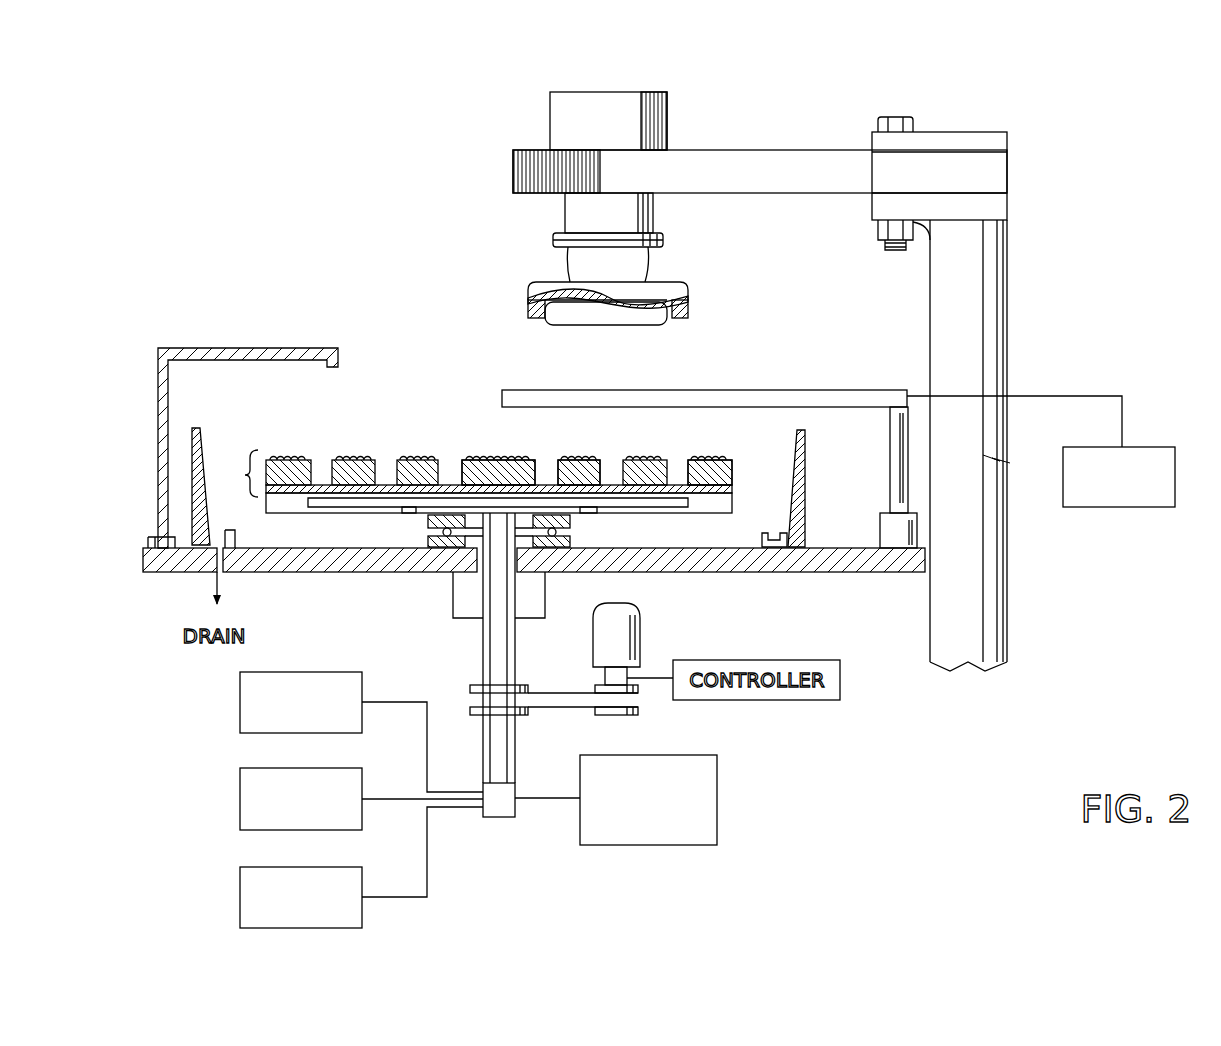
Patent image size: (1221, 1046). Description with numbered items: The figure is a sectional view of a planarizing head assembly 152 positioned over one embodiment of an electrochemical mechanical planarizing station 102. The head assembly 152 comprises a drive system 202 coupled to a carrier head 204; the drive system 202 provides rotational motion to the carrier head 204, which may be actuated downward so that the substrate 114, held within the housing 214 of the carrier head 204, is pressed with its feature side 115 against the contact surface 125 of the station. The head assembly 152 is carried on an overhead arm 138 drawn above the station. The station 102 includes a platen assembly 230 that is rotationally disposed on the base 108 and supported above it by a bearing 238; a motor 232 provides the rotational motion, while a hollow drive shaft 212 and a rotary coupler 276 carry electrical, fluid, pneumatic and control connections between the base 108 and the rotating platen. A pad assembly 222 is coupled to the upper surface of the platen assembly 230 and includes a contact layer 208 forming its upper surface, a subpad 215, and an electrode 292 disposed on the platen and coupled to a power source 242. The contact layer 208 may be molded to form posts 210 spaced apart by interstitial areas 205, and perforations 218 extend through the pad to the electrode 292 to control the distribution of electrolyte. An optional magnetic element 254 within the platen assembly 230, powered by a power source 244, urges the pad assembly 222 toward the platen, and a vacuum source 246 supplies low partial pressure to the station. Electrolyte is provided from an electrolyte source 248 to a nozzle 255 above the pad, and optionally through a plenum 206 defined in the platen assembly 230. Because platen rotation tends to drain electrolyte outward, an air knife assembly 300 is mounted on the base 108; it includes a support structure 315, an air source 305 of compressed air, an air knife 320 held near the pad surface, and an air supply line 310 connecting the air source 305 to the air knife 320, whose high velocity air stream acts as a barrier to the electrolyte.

The ECMP station 102 is at (276, 236).
The base 108 is at (805, 575).
The substrate 114 is at (567, 300).
The feature side 115 is at (630, 327).
The contact surface 125 is at (485, 349).
The arm 138 is at (774, 150).
The planarizing head assembly 152 is at (528, 212).
The drive system 202 is at (550, 106).
The carrier head 204 is at (684, 282).
The interstitial areas 205 is at (500, 458).
The plenum 206 is at (733, 460).
The contact layer 208 is at (680, 458).
The posts 210 is at (568, 458).
The hollow drive shaft 212 is at (483, 647).
The housing 214 is at (692, 298).
The subpad 215 is at (733, 472).
The perforations 218 is at (385, 450).
The pad assembly 222 is at (245, 475).
The platen assembly 230 is at (288, 505).
The motor 232 is at (640, 620).
The bearing 238 is at (568, 537).
The power source 242 is at (240, 897).
The power source 244 is at (240, 799).
The vacuum source 246 is at (240, 702).
The electrolyte source 248 is at (718, 787).
The magnetic element 254 is at (405, 512).
The nozzle 255 is at (318, 342).
The rotary coupler 276 is at (498, 805).
The electrode 292 is at (733, 490).
The air knife assembly 300 is at (790, 329).
The air source 305 is at (1148, 510).
The air supply line 310 is at (1122, 414).
The support structure 315 is at (908, 418).
The air knife 320 is at (878, 390).